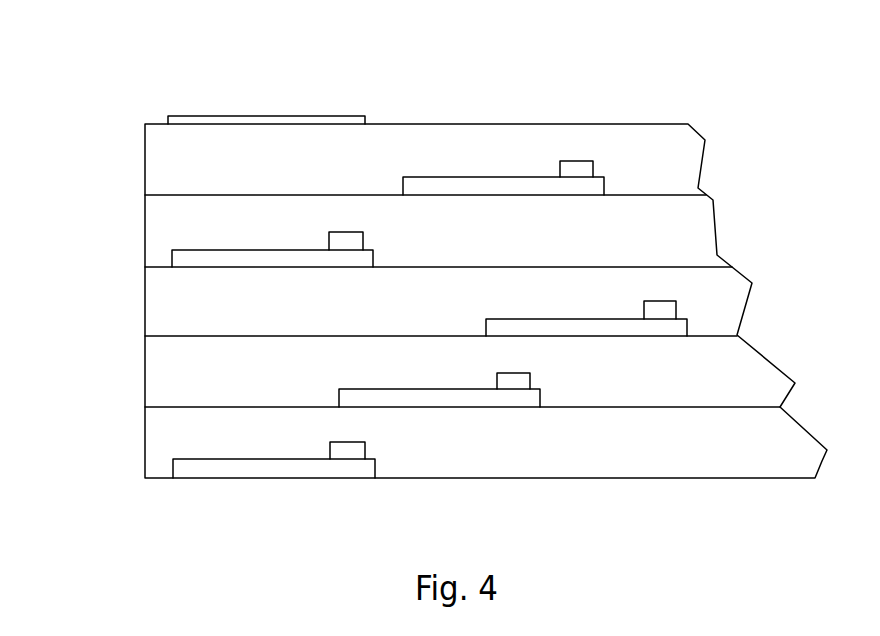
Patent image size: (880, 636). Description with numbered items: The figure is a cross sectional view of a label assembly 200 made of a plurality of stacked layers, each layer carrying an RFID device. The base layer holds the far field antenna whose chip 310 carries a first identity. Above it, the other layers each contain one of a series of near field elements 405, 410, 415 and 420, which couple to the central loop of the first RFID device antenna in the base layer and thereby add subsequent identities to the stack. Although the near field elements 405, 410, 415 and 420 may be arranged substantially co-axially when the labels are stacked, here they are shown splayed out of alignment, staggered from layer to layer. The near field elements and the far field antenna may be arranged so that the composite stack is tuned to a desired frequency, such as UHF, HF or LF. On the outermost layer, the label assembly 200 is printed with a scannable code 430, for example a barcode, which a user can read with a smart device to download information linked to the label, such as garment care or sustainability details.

The label assembly 200 is at (124, 126).
The chip 310 is at (288, 467).
The near field element 405 is at (580, 169).
The near field element 410 is at (348, 247).
The near field element 415 is at (665, 311).
The near field element 420 is at (517, 383).
The scannable code 430 is at (218, 118).